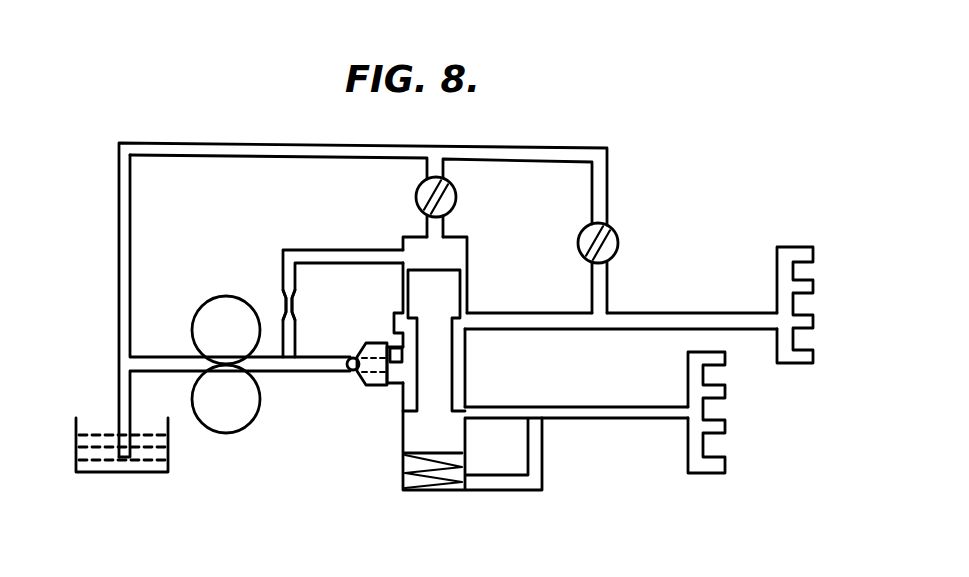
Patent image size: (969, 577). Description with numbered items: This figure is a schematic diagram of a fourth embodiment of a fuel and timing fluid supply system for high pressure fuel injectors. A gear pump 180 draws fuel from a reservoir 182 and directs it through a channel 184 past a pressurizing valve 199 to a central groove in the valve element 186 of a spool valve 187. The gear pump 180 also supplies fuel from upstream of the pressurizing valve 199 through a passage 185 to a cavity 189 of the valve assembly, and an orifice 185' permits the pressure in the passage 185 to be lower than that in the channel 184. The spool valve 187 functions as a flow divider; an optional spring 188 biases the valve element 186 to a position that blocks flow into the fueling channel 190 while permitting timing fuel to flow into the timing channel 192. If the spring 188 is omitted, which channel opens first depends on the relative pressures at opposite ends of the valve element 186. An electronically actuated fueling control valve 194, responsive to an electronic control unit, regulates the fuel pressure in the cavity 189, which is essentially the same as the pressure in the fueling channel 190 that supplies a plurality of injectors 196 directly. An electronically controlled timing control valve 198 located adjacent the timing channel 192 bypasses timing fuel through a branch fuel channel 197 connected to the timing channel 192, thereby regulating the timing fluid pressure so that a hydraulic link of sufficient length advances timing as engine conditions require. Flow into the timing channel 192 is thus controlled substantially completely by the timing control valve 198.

The gear pump 180 is at (226, 296).
The reservoir 182 is at (117, 474).
The channel 184 is at (264, 373).
The passage 185 is at (329, 284).
The orifice 185' is at (316, 292).
The valve element 186 is at (412, 434).
The spool valve 187 is at (390, 389).
The spring 188 is at (440, 488).
The cavity 189 is at (406, 242).
The fueling channel 190 is at (520, 404).
The timing channel 192 is at (535, 318).
The fueling control valve 194 is at (417, 194).
The injectors 196 is at (795, 240).
The branch fuel channel 197 is at (591, 290).
The timing control valve 198 is at (619, 238).
The pressurizing valve 199 is at (366, 345).